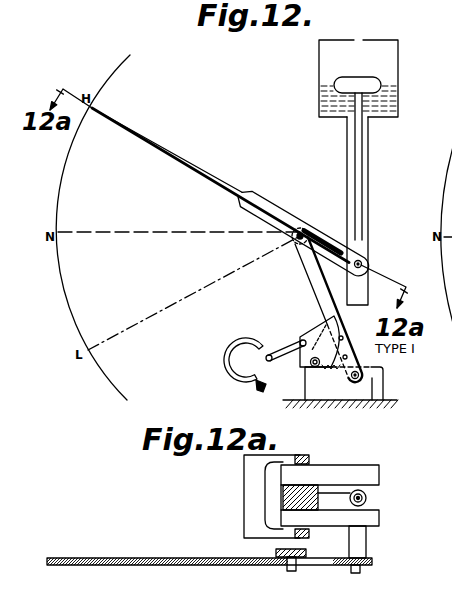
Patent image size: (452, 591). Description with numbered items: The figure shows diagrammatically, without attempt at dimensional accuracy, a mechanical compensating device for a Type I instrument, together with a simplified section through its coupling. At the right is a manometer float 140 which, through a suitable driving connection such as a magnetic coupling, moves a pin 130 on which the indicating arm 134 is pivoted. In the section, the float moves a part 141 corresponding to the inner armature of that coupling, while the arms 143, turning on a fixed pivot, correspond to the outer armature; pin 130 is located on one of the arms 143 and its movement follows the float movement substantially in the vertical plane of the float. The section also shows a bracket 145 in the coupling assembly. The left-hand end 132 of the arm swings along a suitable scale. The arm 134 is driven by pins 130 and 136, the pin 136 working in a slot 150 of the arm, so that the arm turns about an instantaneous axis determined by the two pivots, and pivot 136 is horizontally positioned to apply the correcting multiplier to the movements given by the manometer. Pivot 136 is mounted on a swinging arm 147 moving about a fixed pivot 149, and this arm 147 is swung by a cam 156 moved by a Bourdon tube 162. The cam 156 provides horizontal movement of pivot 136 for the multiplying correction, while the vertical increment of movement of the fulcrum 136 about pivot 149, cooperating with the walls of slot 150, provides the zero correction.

In FIG. 12, the pin 130 is at (361, 263).
In FIG. 12a, the pin 130 is at (360, 570).
In FIG. 12, the left-hand end of the arm 132 is at (98, 112).
In FIG. 12, the indicating arm 134 is at (212, 177).
In FIG. 12a, the indicating arm 134 is at (164, 558).
In FIG. 12, the pin 136 is at (296, 246).
In FIG. 12a, the pin 136 is at (287, 567).
In FIG. 12, the manometer float 140 is at (371, 84).
In FIG. 12, the part corresponding to inner armature 141 is at (360, 184).
In FIG. 12a, the part corresponding to inner armature 141 is at (367, 498).
In FIG. 12a, the arms 143 is at (350, 471).
In FIG. 12a, the bracket with bolts 145 is at (307, 458).
In FIG. 12, the swinging arm 147 is at (312, 291).
In FIG. 12a, the swinging arm 147 is at (275, 553).
In FIG. 12, the fixed pivot 149 is at (362, 376).
In FIG. 12, the slot 150 is at (316, 242).
In FIG. 12, the cam 156 is at (316, 336).
In FIG. 12, the Bourdon tube 162 is at (230, 348).